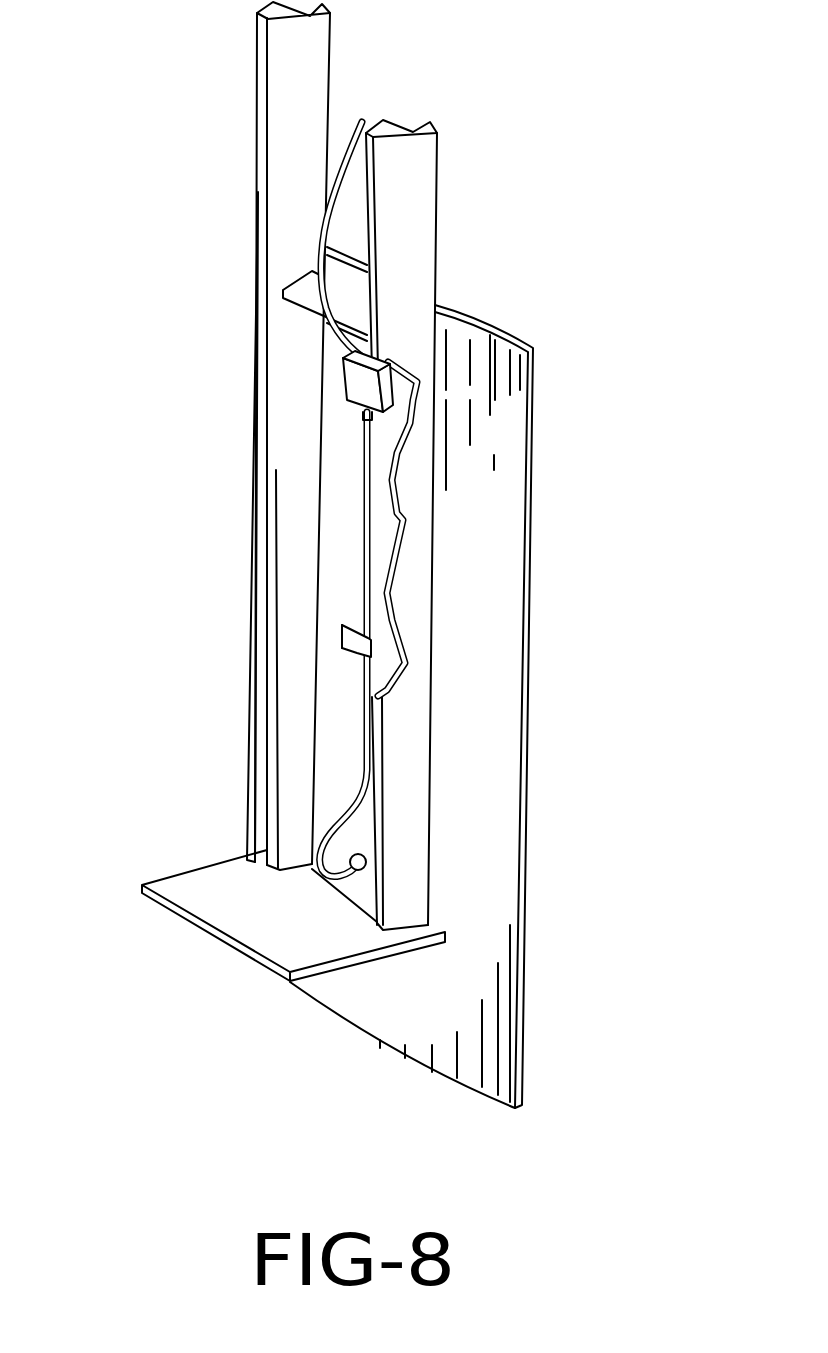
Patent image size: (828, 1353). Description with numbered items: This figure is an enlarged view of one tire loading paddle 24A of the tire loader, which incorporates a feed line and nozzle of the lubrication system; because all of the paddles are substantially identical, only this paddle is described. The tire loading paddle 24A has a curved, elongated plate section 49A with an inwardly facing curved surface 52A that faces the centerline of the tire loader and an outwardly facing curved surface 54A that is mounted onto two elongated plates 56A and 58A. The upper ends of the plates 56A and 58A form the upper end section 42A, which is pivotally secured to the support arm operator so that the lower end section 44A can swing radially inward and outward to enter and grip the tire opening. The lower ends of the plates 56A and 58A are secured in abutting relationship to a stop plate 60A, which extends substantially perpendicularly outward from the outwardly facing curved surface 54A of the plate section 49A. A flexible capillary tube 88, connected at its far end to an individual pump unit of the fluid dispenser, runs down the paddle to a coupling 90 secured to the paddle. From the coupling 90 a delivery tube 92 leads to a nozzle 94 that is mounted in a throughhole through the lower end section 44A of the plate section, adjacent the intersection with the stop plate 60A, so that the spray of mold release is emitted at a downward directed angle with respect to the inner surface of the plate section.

The tire loading paddle 24A is at (635, 318).
The upper end section 42A is at (515, 242).
The lower end section 44A is at (570, 1003).
The curved elongated plate section 49A is at (500, 495).
The inwardly facing curved surface 52A is at (482, 808).
The outwardly facing curved surface 54A is at (495, 418).
The elongated plate 56A is at (412, 566).
The elongated plate 58A is at (303, 555).
The stop plate 60A is at (188, 880).
The flexible capillary tube 88 is at (328, 216).
The coupling 90 is at (352, 384).
The delivery tube 92 is at (342, 805).
The nozzle 94 is at (366, 860).